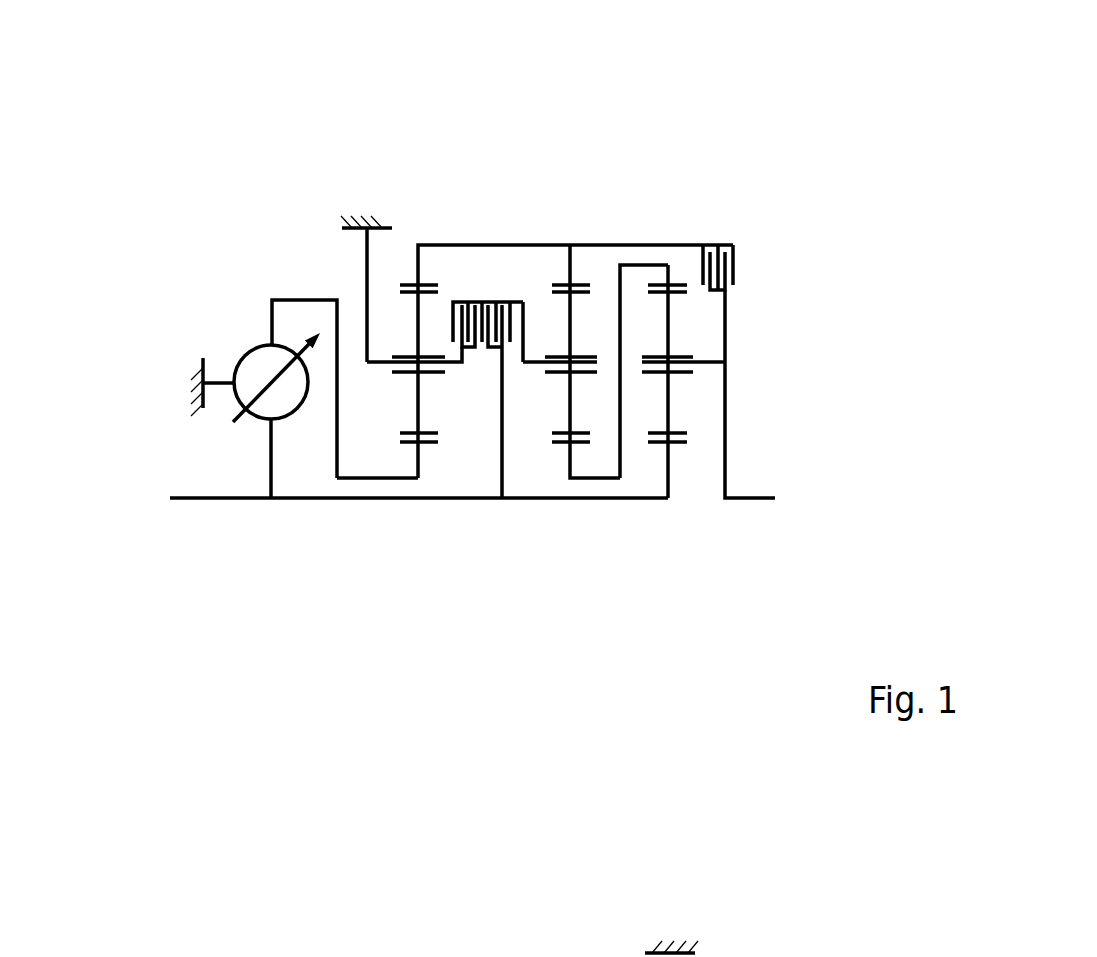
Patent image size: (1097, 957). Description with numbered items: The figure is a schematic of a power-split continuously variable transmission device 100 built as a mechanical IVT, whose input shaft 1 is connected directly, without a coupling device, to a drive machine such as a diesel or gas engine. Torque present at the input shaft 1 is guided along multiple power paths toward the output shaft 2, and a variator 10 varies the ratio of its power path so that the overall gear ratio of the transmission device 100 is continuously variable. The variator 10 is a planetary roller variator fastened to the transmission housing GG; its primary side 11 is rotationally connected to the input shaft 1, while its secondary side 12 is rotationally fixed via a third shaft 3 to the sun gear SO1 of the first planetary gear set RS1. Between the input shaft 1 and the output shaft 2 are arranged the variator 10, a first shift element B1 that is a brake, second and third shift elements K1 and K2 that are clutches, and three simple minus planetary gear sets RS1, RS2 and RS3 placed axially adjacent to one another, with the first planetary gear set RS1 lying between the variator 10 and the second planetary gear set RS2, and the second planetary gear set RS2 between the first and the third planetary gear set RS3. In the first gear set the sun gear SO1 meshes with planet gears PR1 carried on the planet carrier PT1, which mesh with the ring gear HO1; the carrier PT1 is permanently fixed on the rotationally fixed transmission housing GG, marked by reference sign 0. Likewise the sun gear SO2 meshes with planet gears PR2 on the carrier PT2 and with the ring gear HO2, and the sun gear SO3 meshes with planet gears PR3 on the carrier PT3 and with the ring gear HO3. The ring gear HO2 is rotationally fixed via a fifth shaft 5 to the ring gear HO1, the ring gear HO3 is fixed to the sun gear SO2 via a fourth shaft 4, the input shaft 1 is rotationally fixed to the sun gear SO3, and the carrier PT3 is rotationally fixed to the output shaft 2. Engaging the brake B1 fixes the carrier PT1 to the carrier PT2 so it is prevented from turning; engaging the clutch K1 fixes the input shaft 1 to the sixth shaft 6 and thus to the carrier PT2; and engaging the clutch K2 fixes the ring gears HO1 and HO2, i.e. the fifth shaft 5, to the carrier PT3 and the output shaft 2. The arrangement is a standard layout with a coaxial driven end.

The transmission device 100 is at (786, 103).
The input shaft 1 is at (233, 500).
The output shaft 2 is at (750, 497).
The third shaft 3 is at (377, 480).
The fourth shaft 4 is at (636, 265).
The fifth shaft 5 is at (480, 245).
The sixth shaft 6 is at (525, 327).
The rotationally fixed component 0 is at (367, 272).
The variator 10 is at (243, 357).
The primary side 11 is at (212, 468).
The secondary side 12 is at (217, 305).
The transmission housing GG is at (370, 215).
The planet gears PR1 is at (418, 327).
The planet gears PR2 is at (570, 398).
The planet gears PR3 is at (668, 325).
The ring gear HO1 is at (407, 285).
The ring gear HO2 is at (580, 283).
The ring gear HO3 is at (678, 285).
The sun gear SO1 is at (430, 444).
The sun gear SO2 is at (582, 445).
The sun gear SO3 is at (677, 445).
The planet carrier PT1 is at (380, 365).
The planet carrier PT2 is at (528, 365).
The planet carrier PT3 is at (707, 357).
The first planetary gear set RS1 is at (418, 508).
The second planetary gear set RS2 is at (570, 508).
The third planetary gear set RS3 is at (668, 508).
The first shift element B1 is at (458, 292).
The second shift element K1 is at (502, 292).
The third shift element K2 is at (713, 238).